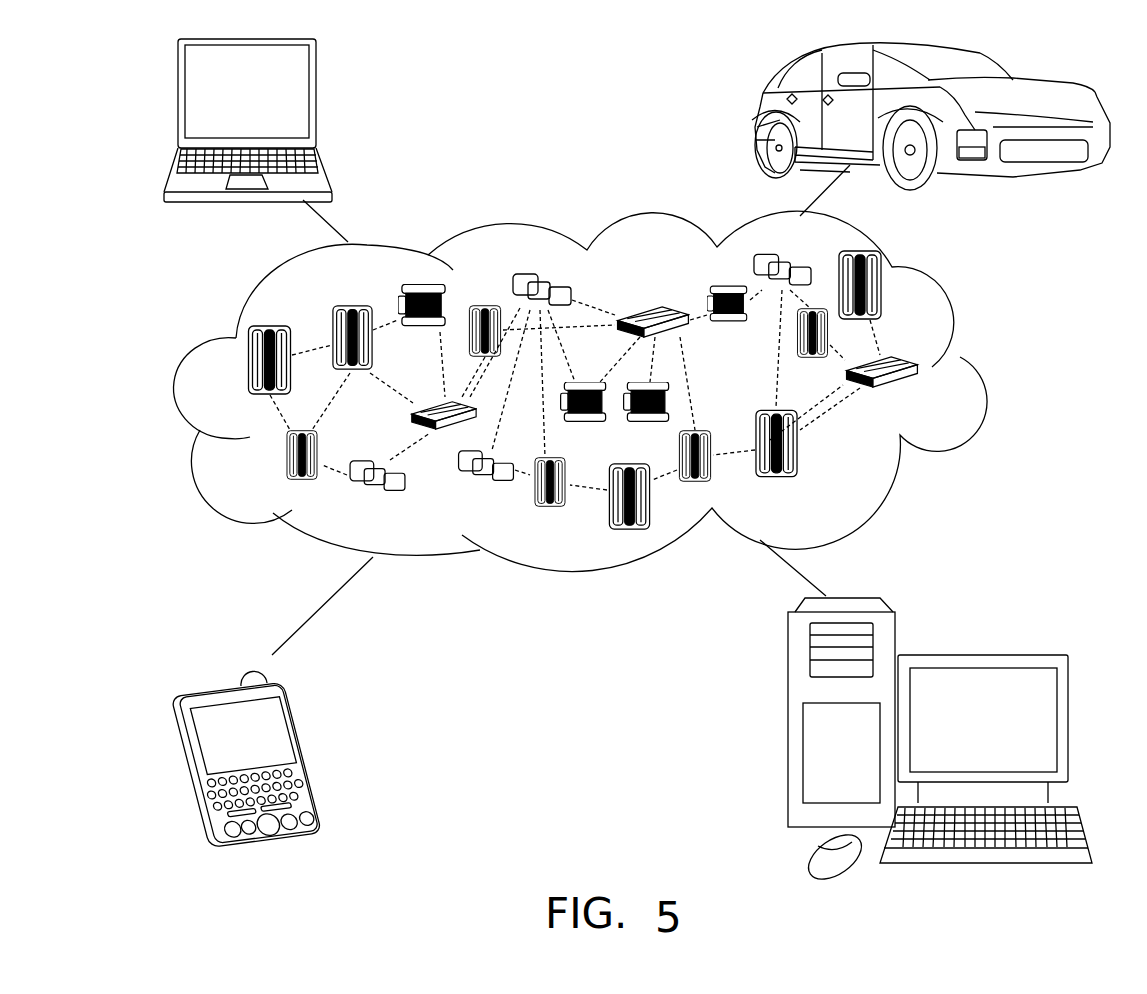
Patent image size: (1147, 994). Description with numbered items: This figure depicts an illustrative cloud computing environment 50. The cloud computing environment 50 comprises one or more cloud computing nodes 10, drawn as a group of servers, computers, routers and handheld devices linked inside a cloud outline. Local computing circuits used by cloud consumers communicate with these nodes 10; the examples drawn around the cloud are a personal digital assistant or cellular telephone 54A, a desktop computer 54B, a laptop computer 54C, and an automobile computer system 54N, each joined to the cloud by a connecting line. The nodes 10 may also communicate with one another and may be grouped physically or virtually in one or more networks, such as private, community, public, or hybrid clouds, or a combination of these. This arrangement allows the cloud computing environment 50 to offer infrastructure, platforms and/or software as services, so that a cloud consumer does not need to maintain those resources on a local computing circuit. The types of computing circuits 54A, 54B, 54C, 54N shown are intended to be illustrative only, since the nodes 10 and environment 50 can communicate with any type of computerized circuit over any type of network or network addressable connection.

The cloud computing nodes 10 is at (925, 401).
The cloud computing environment 50 is at (982, 372).
The personal digital assistant (PDA) or cellular telephone 54A is at (305, 748).
The desktop computer 54B is at (980, 655).
The laptop computer 54C is at (318, 98).
The automobile computer system 54N is at (758, 116).